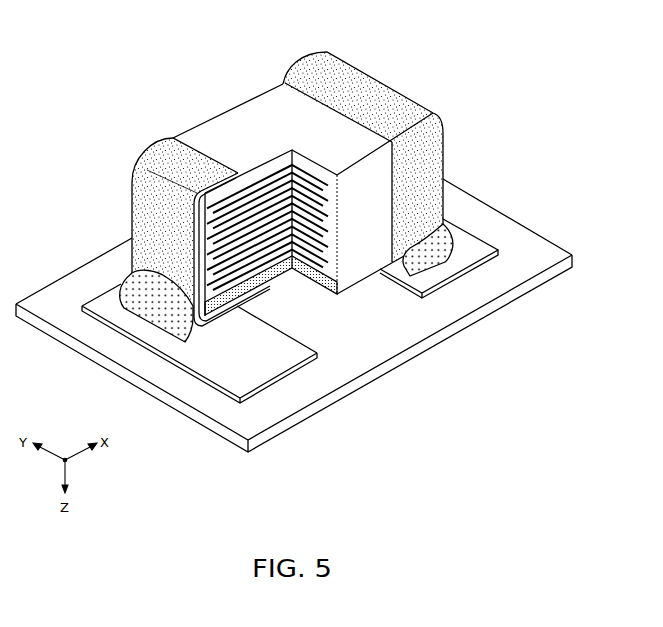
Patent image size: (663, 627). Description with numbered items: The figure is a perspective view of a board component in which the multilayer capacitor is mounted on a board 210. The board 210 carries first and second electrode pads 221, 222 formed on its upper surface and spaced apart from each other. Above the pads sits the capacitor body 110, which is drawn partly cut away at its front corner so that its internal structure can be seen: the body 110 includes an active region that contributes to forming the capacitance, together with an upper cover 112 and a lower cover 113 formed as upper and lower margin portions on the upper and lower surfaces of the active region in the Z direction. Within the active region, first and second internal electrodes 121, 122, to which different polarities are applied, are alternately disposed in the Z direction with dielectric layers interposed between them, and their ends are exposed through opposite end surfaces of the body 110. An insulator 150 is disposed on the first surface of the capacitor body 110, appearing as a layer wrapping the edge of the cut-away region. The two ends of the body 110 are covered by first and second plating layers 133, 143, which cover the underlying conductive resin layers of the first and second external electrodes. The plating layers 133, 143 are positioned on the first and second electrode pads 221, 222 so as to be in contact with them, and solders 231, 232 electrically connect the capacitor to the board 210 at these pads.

The capacitor body 110 is at (267, 101).
The upper cover 112 is at (238, 187).
The lower cover 113 is at (305, 256).
The first internal electrode 121 is at (232, 278).
The second internal electrode 122 is at (323, 258).
The first plating layer 133 is at (157, 153).
The second plating layer 143 is at (320, 65).
The insulator 150 is at (300, 288).
The board 210 is at (526, 243).
The first electrode pad 221 is at (100, 305).
The second electrode pad 222 is at (485, 242).
The solder 231 is at (127, 289).
The solder 232 is at (448, 254).